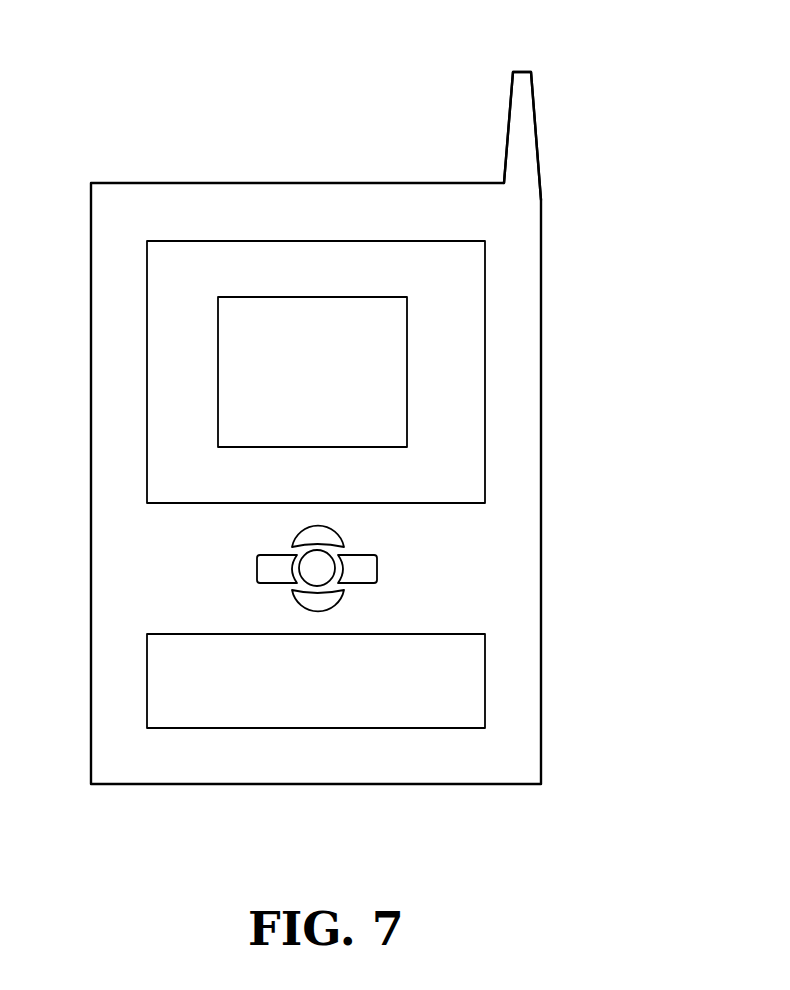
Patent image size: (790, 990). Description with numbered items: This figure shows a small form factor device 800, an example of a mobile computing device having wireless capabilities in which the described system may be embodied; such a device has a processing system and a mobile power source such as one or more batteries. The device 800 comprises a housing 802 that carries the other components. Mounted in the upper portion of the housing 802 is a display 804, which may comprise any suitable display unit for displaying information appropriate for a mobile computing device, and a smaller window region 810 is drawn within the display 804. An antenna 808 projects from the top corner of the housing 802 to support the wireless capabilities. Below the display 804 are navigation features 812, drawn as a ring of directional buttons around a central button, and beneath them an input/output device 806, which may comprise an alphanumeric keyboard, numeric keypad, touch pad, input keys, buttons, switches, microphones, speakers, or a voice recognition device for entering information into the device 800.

The small form factor device 800 is at (165, 88).
The housing 802 is at (541, 440).
The display 804 is at (485, 260).
The input/output (I/O) device 806 is at (485, 672).
The antenna 808 is at (510, 95).
The display window 810 is at (407, 353).
The navigation features 812 is at (386, 593).